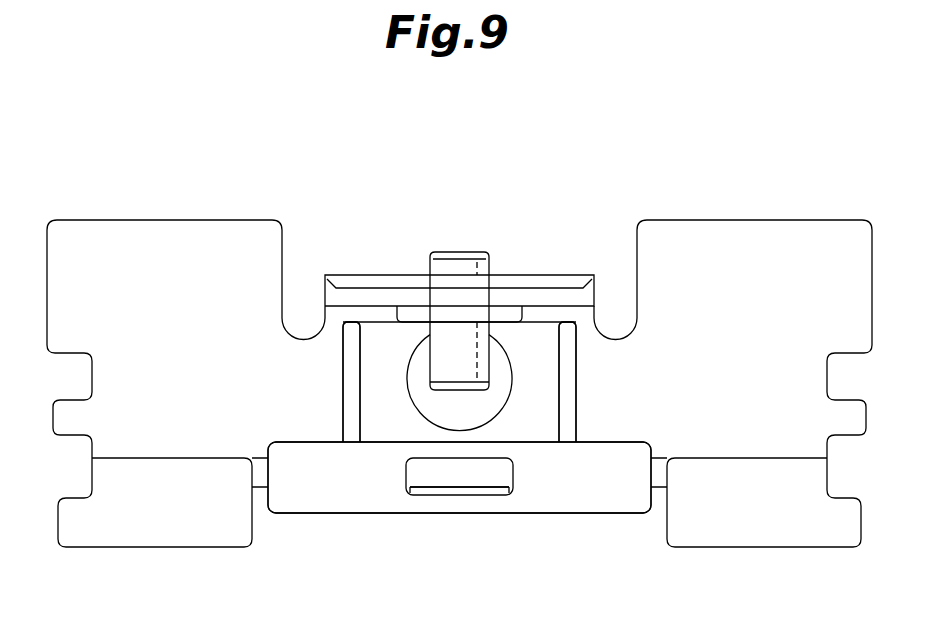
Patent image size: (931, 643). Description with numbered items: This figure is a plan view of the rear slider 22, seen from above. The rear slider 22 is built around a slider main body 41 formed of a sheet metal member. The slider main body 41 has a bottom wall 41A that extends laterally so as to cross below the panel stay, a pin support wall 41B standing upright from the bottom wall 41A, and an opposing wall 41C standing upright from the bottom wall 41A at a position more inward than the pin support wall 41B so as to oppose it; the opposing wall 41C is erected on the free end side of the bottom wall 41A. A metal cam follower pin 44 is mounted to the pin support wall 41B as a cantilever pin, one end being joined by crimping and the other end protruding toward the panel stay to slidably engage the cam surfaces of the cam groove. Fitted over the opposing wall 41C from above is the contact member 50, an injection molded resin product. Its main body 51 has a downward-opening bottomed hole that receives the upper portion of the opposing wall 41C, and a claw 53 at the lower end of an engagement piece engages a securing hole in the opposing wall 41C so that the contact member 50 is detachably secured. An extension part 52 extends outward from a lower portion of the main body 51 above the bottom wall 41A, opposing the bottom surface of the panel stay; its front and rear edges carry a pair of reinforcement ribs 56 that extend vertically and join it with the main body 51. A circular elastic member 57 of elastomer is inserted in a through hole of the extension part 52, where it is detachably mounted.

The rear slider 22 is at (230, 152).
The slider main body 41 is at (729, 219).
The bottom wall 41A is at (117, 416).
The pin support wall 41B is at (362, 290).
The opposing wall 41C is at (436, 484).
The cam follower pin 44 is at (441, 363).
The contact member 50 is at (576, 516).
The main body 51 is at (320, 515).
The extension part 52 is at (535, 361).
The claw 53 is at (475, 495).
The reinforcement ribs 56 is at (350, 395).
The elastic member 57 is at (497, 372).